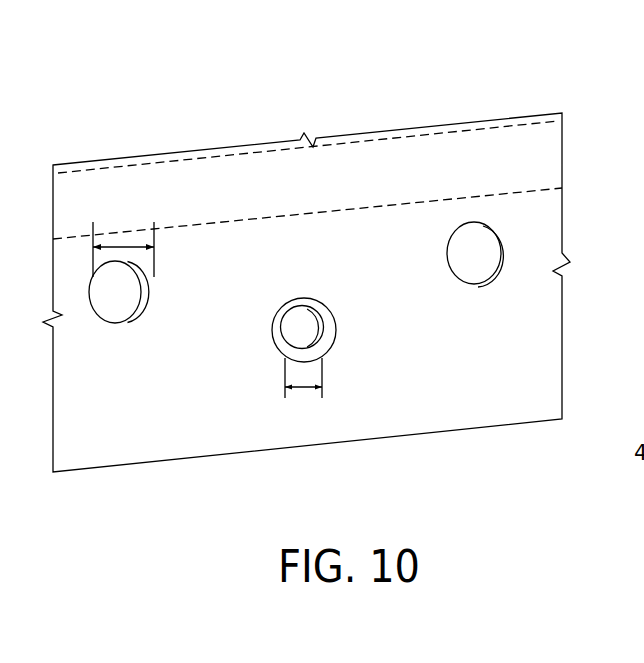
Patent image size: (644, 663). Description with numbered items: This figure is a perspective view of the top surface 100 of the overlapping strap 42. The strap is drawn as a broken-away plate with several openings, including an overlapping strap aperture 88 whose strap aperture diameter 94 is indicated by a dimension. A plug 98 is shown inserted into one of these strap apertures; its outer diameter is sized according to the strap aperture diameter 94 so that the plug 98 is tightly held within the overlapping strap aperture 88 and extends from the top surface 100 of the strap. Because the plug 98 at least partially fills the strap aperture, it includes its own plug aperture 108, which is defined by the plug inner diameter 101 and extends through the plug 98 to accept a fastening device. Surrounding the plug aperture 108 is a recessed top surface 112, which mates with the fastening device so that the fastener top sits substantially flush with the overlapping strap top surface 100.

The overlapping strap 42 is at (122, 97).
The top surface 100 is at (404, 172).
The overlapping strap aperture 88 is at (506, 243).
The strap aperture diameter 94 is at (124, 244).
The plug 98 is at (307, 301).
The recessed top surface 112 is at (327, 318).
The plug aperture 108 is at (289, 329).
The plug inner diameter 101 is at (304, 390).